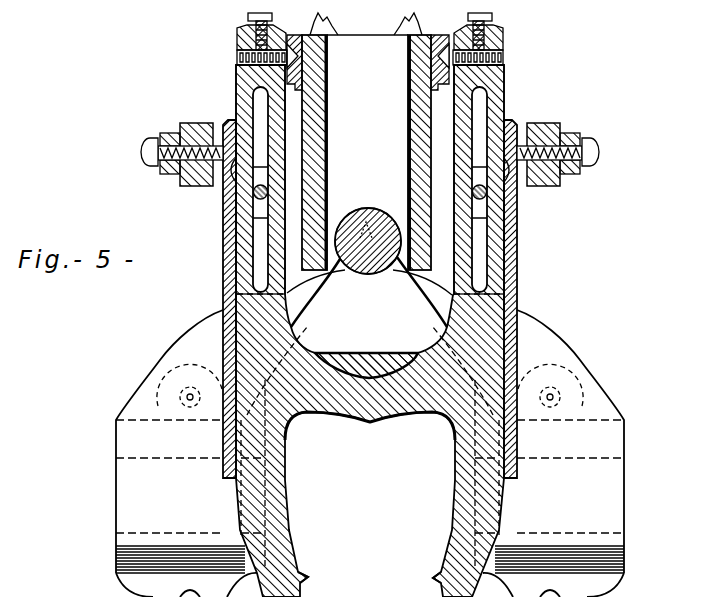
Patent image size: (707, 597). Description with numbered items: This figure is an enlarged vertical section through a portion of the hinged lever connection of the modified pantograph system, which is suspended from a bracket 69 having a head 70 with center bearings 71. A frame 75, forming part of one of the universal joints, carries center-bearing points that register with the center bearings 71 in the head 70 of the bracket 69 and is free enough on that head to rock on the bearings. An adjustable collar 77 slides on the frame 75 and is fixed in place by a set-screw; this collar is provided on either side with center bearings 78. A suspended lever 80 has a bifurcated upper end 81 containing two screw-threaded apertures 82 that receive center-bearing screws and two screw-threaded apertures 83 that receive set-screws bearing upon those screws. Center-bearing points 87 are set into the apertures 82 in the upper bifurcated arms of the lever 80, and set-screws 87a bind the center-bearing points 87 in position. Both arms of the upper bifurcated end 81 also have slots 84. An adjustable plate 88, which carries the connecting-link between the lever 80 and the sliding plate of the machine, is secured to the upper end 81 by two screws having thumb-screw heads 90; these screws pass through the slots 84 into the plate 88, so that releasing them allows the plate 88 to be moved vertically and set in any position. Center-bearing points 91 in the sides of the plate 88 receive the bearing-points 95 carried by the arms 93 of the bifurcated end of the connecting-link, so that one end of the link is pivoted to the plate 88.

The bracket 69 is at (369, 317).
The head 70 is at (349, 269).
The center bearings 71 is at (365, 222).
The frame 75 is at (385, 145).
The adjustable collar 77 is at (437, 33).
The center bearings 78 is at (447, 53).
The suspended lever 80 is at (305, 570).
The bifurcated upper end 81 is at (245, 292).
The screw-threaded apertures 82 is at (503, 55).
The screw-threaded apertures 83 is at (498, 23).
The slots 84 is at (487, 100).
The center-bearing points 87 is at (508, 60).
The set-screws 87a is at (489, 13).
The adjustable plate 88 is at (518, 225).
The thumb-screw heads 90 is at (474, 188).
The center-bearing points 91 is at (520, 187).
The arms 93 is at (549, 123).
The bearing-points 95 is at (601, 152).